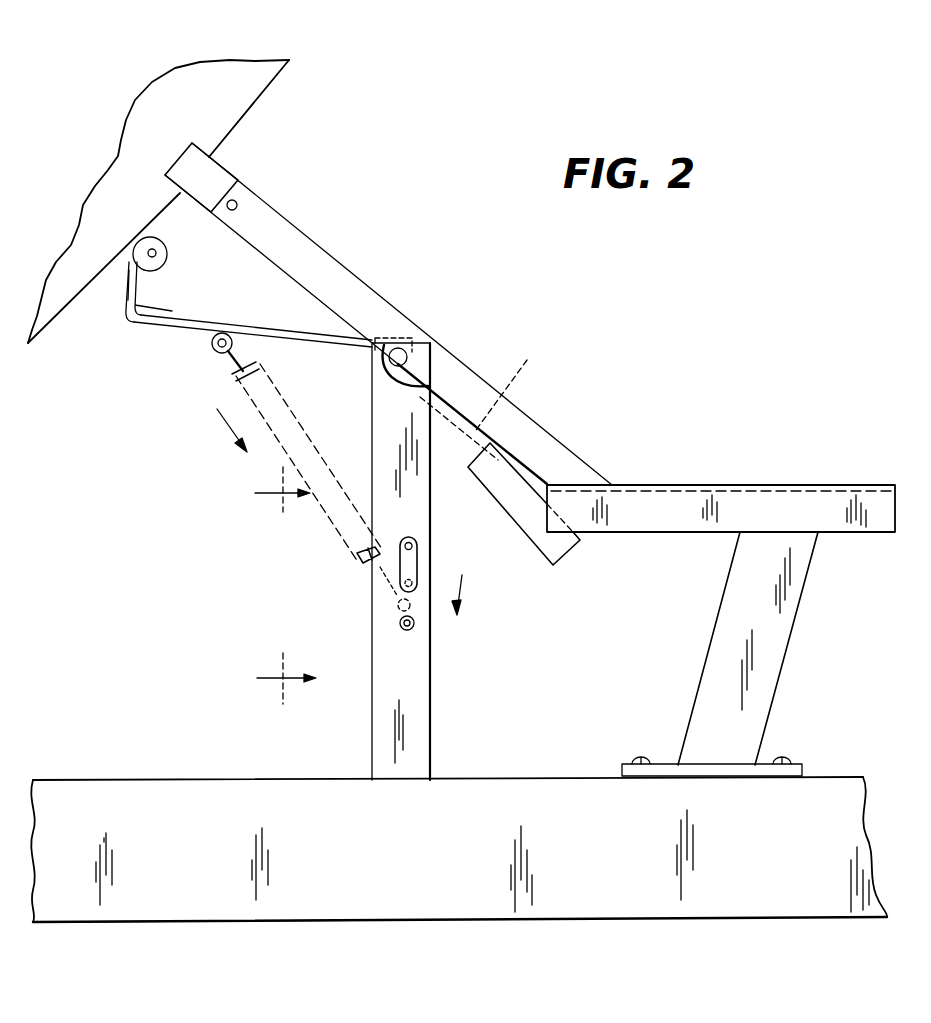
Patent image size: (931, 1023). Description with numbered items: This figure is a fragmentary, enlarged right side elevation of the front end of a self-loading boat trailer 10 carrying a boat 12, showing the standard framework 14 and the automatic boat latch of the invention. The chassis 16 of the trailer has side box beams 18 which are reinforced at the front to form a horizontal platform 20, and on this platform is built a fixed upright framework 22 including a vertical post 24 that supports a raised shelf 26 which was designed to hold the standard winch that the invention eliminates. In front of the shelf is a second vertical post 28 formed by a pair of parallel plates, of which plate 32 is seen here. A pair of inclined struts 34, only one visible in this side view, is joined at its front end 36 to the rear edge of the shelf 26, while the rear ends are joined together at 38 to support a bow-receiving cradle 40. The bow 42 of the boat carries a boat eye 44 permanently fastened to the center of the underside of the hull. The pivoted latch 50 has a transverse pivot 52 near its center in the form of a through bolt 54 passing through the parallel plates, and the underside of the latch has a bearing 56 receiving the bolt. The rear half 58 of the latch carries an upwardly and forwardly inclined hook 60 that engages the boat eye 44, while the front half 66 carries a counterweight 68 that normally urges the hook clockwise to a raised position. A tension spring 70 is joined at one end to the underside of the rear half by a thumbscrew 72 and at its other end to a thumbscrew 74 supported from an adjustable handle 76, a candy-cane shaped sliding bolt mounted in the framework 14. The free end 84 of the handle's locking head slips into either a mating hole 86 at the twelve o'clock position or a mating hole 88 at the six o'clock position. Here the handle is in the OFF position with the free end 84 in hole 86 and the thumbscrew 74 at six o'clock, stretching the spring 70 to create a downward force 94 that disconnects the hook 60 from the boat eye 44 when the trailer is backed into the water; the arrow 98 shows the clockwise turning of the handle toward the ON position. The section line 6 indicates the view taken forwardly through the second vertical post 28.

The trailer 10 is at (372, 920).
The boat 12 is at (168, 97).
The standard framework 14 is at (390, 725).
The chassis 16 is at (97, 793).
The side box beams 18 is at (220, 900).
The horizontal platform 20 is at (493, 778).
The fixed upright framework 22 is at (770, 643).
The vertical post 24 is at (795, 578).
The raised shelf 26 is at (678, 484).
The second vertical post 28 is at (420, 682).
The parallel plate 32 is at (385, 403).
The inclined struts 34 is at (330, 253).
The front end of struts 36 is at (565, 484).
The joint of struts 38 is at (236, 202).
The bow-receiving cradle 40 is at (213, 163).
The bow 42 is at (290, 60).
The boat eye 44 is at (167, 244).
The pivoted latch 50 is at (277, 326).
The transverse pivot 52 is at (400, 349).
The through bolt 54 is at (428, 376).
The bearing 56 is at (372, 369).
The rear half of latch 58 is at (193, 317).
The hook 60 is at (125, 278).
The front half of latch 66 is at (532, 363).
The counterweight 68 is at (581, 545).
The tension spring 70 is at (272, 440).
The thumbscrew 72 is at (208, 344).
The thumbscrew 74 is at (394, 605).
The adjustable handle 76 is at (398, 566).
The free end of locking head 84 is at (418, 572).
The mating hole 86 is at (415, 538).
The mating hole 88 is at (415, 628).
The downward force 94 is at (217, 409).
The directional arrow 98 is at (462, 575).
The section line 6- 6 is at (284, 586).